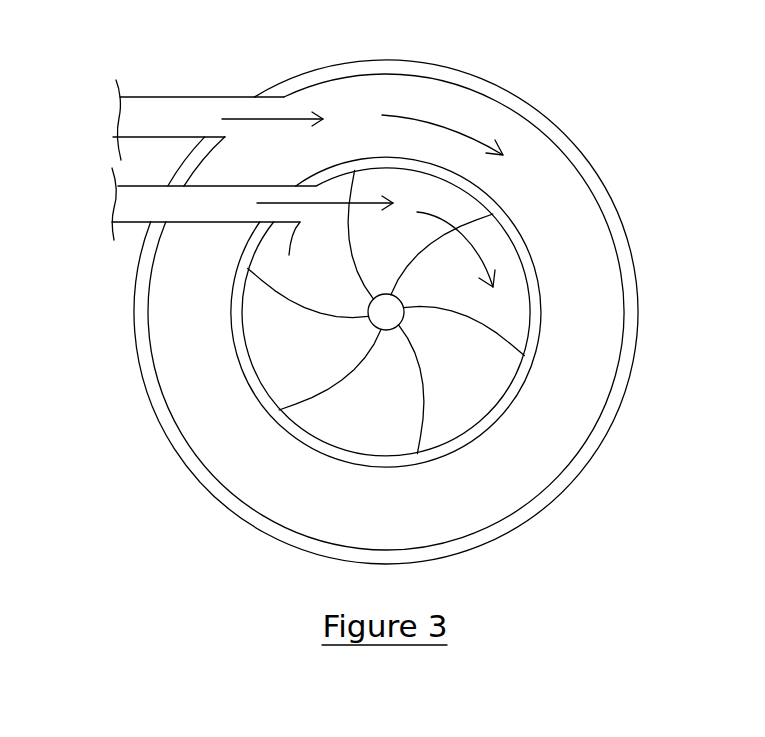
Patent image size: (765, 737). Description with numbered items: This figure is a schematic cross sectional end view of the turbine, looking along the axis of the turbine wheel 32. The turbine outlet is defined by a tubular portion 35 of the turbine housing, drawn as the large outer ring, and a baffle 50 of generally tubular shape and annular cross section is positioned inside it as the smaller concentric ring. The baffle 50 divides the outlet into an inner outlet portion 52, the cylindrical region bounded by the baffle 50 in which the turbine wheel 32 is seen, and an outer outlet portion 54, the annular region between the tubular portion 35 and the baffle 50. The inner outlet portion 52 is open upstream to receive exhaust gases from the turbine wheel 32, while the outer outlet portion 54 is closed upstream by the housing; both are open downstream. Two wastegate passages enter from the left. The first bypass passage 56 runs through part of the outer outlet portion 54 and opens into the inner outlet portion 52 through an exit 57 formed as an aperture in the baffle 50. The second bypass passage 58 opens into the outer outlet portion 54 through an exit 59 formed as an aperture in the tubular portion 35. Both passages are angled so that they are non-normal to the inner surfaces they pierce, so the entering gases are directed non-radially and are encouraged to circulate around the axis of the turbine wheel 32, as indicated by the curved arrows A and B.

The turbine wheel 32 is at (477, 372).
The tubular portion 35 is at (195, 467).
The baffle 50 is at (540, 312).
The inner outlet portion 52 is at (285, 355).
The outer outlet portion 54 is at (522, 455).
The first bypass passage 56 is at (141, 207).
The exit 57 is at (233, 297).
The second bypass passage 58 is at (141, 122).
The exit 59 is at (247, 113).
The arrow A is at (297, 123).
The arrow B is at (368, 197).